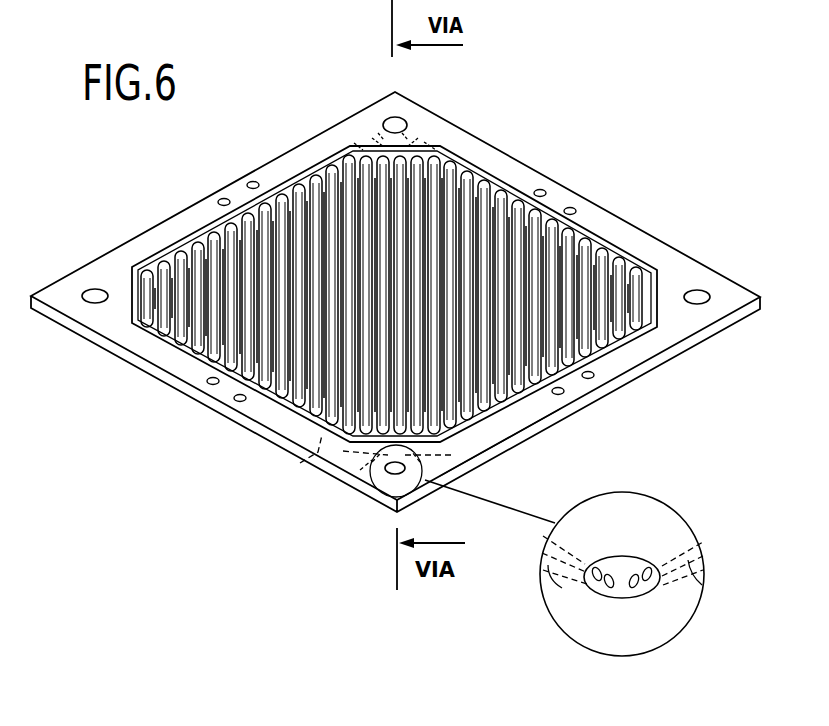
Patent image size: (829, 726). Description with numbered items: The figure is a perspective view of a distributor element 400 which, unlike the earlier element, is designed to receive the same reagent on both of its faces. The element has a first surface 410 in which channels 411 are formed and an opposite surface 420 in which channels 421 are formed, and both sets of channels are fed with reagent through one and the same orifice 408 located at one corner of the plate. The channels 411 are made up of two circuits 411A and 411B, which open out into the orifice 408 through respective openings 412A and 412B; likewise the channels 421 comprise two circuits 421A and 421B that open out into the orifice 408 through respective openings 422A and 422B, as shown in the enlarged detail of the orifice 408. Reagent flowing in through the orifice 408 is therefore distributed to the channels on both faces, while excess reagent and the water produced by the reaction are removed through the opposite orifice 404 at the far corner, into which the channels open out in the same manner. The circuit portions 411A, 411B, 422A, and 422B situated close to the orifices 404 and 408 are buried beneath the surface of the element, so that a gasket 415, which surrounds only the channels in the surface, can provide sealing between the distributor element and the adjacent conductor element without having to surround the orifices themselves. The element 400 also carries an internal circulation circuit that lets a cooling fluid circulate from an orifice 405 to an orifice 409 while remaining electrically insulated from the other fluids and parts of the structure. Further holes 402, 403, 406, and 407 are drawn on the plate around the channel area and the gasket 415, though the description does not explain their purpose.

The distributor element 400 is at (635, 218).
The mounting hole 402 is at (97, 288).
The via holes 403 is at (253, 182).
The orifice 404 is at (401, 120).
The orifice 405 is at (571, 207).
The mounting hole 406 is at (697, 290).
The via holes 407 is at (560, 393).
The orifice 408 is at (375, 490).
The orifice 409 is at (238, 398).
The surface 410 is at (488, 160).
The channels 411 is at (510, 428).
The gasket 415 is at (312, 170).
The surface 420 is at (133, 358).
The channels 421 is at (300, 463).
The first circuit of the channels 411 411A is at (543, 540).
The second circuit of the channels 411 411B is at (682, 548).
The opening 412A is at (610, 566).
The opening 412B is at (655, 600).
The first circuit of the channels 421 421A is at (562, 588).
The second circuit of the channels 421 421B is at (702, 585).
The opening 422A is at (618, 592).
The opening 422B is at (630, 598).